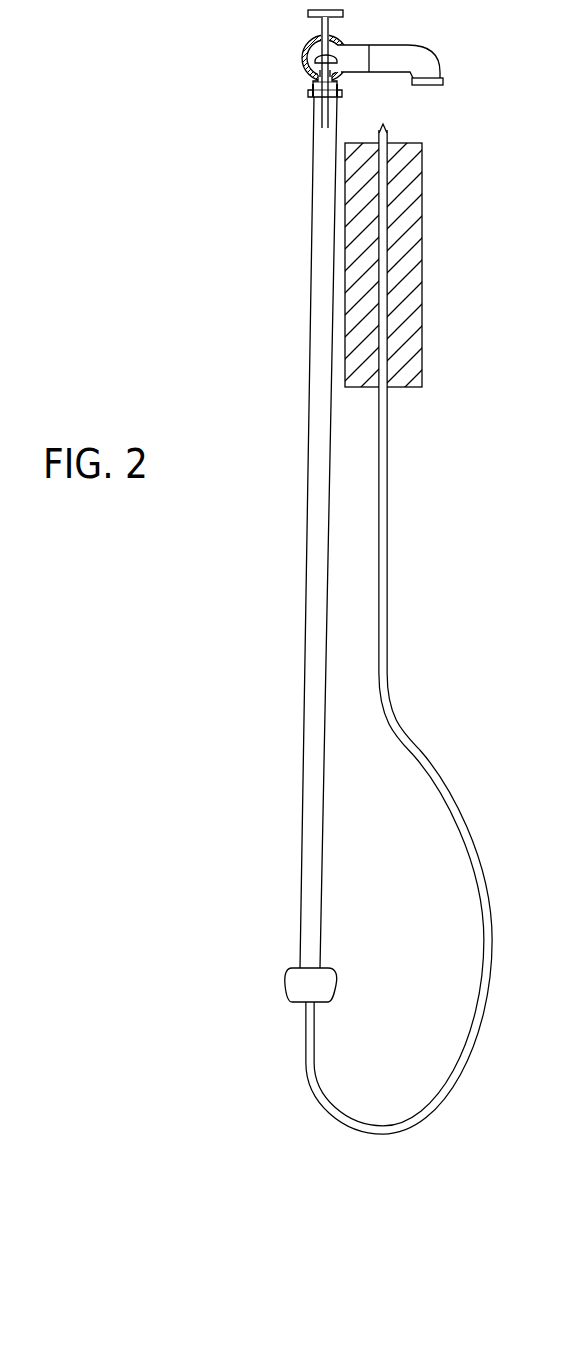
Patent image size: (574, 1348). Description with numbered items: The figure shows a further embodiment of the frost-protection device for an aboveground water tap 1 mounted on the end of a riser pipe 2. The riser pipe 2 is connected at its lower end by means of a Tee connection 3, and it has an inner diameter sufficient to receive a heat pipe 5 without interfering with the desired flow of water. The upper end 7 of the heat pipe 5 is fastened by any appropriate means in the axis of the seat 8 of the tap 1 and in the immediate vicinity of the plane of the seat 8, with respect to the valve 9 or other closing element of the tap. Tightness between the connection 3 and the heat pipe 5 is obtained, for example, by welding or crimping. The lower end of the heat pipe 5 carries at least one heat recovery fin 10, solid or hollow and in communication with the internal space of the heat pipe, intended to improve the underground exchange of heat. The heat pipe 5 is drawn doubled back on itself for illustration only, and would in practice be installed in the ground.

The water tap 1 is at (428, 88).
The riser pipe 2 is at (312, 113).
The Tee connection 3 is at (291, 1008).
The heat pipe 5 is at (415, 752).
The upper end of the heat pipe 7 is at (343, 99).
The seat 8 is at (316, 76).
The valve disc 9 is at (320, 62).
The heat recovery fin 10 is at (416, 245).